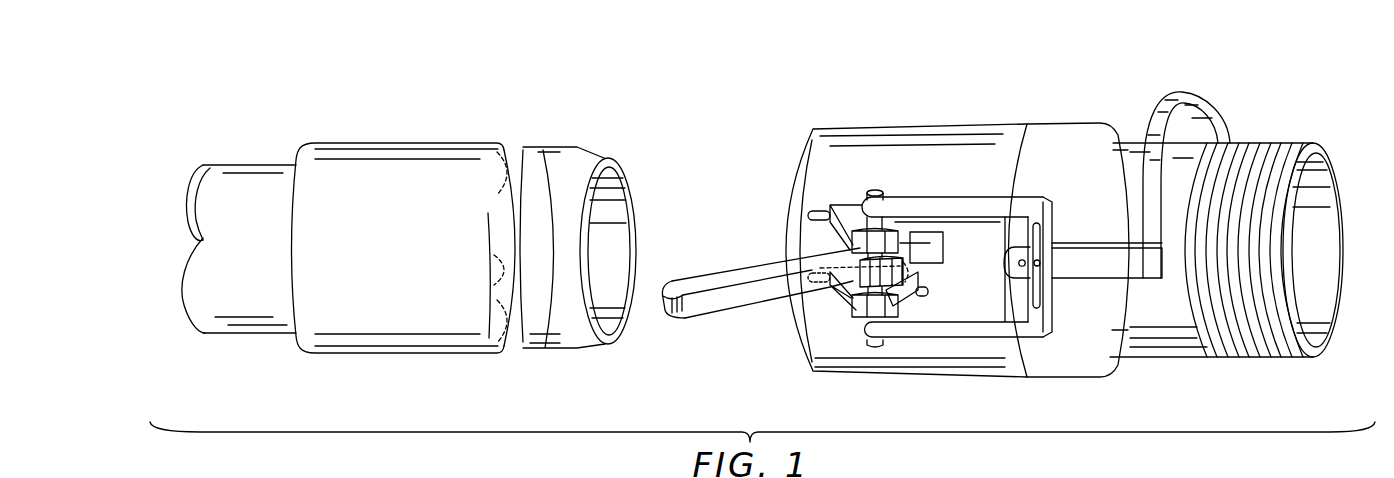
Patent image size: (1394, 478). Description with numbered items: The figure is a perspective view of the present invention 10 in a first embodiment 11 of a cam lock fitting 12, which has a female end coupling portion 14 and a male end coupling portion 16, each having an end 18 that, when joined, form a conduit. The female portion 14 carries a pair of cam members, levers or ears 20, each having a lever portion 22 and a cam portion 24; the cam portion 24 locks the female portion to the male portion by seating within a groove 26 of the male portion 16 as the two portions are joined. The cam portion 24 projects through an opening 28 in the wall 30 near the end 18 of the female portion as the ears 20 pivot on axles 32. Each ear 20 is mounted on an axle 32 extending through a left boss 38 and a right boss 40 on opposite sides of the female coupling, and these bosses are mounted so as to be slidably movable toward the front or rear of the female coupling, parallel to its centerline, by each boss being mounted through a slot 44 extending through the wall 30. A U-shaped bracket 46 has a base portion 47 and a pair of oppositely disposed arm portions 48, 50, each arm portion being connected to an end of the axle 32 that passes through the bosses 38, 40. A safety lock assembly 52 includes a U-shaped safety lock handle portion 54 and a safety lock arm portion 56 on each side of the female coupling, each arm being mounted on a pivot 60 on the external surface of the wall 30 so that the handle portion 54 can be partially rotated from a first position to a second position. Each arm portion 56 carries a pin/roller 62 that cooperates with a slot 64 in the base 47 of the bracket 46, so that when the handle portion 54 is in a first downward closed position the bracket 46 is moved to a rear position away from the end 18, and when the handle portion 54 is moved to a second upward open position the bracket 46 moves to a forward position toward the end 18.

The present invention 10 is at (1308, 53).
The first embodiment 11 is at (1126, 73).
The cam lock fitting 12 is at (781, 124).
The female end coupling portion 14 is at (942, 130).
The male end coupling portion 16 is at (430, 141).
The end 18 is at (622, 329).
The cam member, lever or ear 20 is at (716, 321).
The lever portion 22 is at (697, 283).
The cam portion 24 is at (887, 298).
The groove 26 is at (522, 150).
The opening 28 is at (906, 262).
The wall 30 is at (925, 246).
The axle 32 is at (872, 190).
The left boss 38 is at (847, 302).
The right boss 40 is at (917, 214).
The slot 44 is at (808, 215).
The U-shaped bracket 46 is at (1050, 208).
The base portion 47 is at (1052, 315).
The arm portion 48 is at (985, 328).
The arm portion 50 is at (977, 213).
The safety lock assembly 52 is at (1197, 73).
The U-shaped safety lock handle portion 54 is at (1222, 115).
The safety lock arm portion 56 is at (1117, 275).
The pivot 60 is at (1018, 263).
The pin/roller 62 is at (1040, 262).
The slot 64 is at (1038, 231).